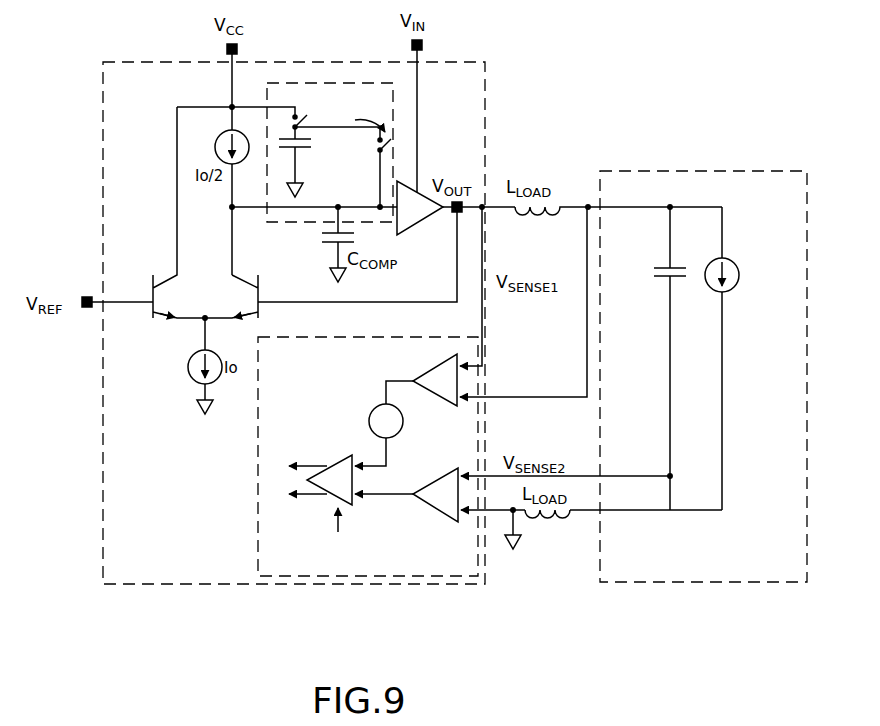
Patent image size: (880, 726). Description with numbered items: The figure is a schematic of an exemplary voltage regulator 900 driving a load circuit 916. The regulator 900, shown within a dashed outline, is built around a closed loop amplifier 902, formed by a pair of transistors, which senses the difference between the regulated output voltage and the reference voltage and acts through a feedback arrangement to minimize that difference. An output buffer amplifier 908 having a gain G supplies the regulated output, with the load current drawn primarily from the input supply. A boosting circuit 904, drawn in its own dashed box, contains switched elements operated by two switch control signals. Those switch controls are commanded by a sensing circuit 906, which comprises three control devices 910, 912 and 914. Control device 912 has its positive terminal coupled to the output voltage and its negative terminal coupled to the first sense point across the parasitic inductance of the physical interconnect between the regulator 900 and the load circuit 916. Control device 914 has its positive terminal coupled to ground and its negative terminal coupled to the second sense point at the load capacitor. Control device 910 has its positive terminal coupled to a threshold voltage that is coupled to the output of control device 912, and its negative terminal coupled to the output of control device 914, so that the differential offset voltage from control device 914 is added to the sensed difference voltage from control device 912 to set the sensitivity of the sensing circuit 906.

The voltage regulator 900 is at (499, 121).
The closed loop amplifier 902 is at (162, 272).
The boosting circuit 904 is at (396, 117).
The sensing circuit 906 is at (462, 577).
The output buffer amplifier 908 is at (418, 190).
The control device 910 is at (334, 455).
The control device 912 is at (425, 370).
The control device 914 is at (430, 522).
The load circuit 916 is at (689, 169).